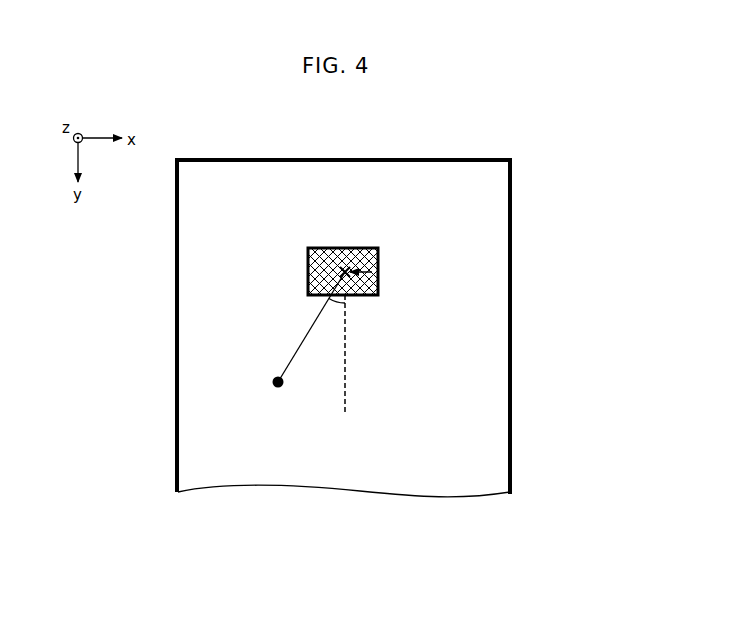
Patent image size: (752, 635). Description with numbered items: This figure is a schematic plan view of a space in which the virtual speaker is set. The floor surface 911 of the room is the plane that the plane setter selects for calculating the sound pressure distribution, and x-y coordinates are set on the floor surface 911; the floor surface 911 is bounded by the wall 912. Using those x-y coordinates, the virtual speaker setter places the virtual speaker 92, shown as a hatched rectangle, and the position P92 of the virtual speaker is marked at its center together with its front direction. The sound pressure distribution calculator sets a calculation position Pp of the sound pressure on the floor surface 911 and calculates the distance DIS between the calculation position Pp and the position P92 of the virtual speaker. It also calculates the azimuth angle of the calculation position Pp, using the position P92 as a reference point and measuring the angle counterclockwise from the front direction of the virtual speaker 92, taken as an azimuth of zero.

The wall 912 is at (346, 158).
The floor surface 911 is at (480, 485).
The virtual speaker 92 is at (378, 258).
The position of the virtual speaker P92 is at (378, 276).
The calculation position of sound pressure Pp is at (272, 381).
The distance DIS is at (302, 337).